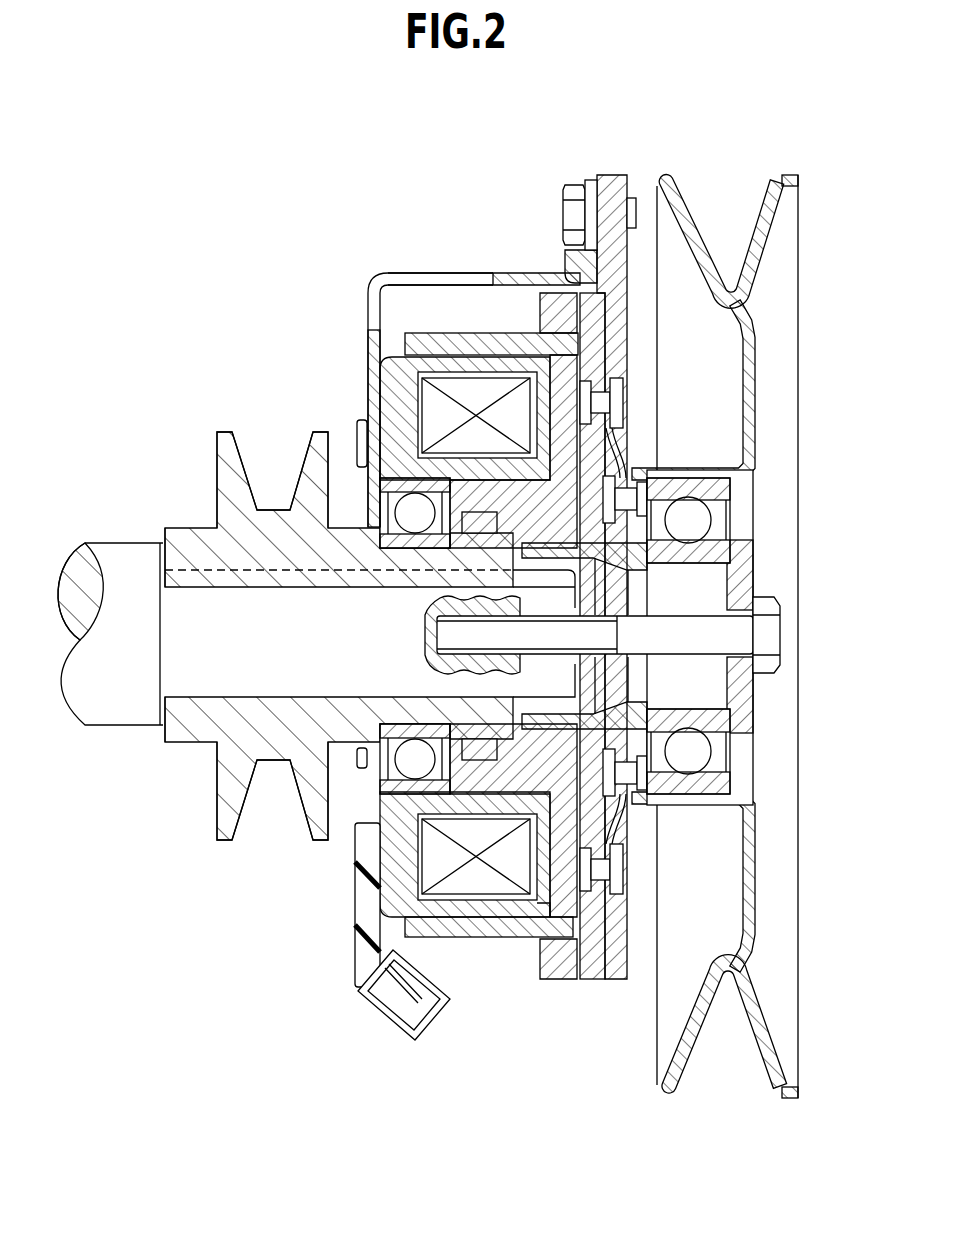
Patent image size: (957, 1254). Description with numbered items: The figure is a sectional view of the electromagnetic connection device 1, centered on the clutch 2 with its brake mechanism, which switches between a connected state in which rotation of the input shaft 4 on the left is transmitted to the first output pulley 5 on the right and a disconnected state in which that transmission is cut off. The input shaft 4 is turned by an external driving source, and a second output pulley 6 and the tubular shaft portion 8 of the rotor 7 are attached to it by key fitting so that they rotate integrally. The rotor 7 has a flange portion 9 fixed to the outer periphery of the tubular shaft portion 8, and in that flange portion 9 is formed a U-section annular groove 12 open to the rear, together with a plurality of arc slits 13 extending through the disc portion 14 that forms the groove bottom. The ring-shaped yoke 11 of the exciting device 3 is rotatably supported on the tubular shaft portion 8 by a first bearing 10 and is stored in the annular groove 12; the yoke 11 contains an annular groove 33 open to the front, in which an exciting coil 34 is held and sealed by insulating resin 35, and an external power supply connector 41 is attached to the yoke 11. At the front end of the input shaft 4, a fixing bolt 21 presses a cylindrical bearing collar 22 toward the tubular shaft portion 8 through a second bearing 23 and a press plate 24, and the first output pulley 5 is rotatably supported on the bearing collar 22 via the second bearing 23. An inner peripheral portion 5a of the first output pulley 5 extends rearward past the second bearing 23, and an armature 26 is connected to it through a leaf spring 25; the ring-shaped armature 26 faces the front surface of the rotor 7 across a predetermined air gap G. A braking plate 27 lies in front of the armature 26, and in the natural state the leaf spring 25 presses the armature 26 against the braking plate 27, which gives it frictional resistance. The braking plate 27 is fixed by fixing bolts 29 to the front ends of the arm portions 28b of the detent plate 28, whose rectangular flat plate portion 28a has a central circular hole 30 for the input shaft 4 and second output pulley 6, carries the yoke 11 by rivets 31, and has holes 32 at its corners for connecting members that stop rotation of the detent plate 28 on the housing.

The electromagnetic connection device 1 is at (162, 166).
The clutch 2 is at (562, 292).
The exciting device 3 is at (476, 945).
The input shaft 4 is at (105, 545).
The first output pulley 5 is at (790, 175).
The inner peripheral portion 5a is at (632, 527).
The second output pulley 6 is at (217, 480).
The rotor 7 is at (434, 325).
The tubular shaft portion 8 is at (375, 540).
The flange portion 9 is at (474, 333).
The first bearing 10 is at (405, 508).
The yoke 11 is at (365, 945).
The annular groove 12 is at (513, 353).
The arc slits 13 is at (560, 903).
The disc portion 14 is at (590, 877).
The fixing bolt 21 is at (780, 635).
The bearing collar 22 is at (715, 588).
The second bearing 23 is at (688, 520).
The press plate 24 is at (745, 548).
The leaf spring 25 is at (618, 455).
The armature 26 is at (597, 353).
The braking plate 27 is at (628, 267).
The detent plate 28 is at (375, 284).
The flat plate portion 28a is at (372, 352).
The arm portions 28b is at (503, 278).
The fixing bolts 29 is at (575, 185).
The circular hole 30 is at (360, 757).
The rivets 31 is at (358, 440).
The holes 32 is at (405, 278).
The annular groove 33 is at (420, 848).
The exciting coil 34 is at (437, 862).
The insulating resin 35 is at (420, 887).
The external power supply connector 41 is at (360, 1003).
The air gap G is at (579, 327).